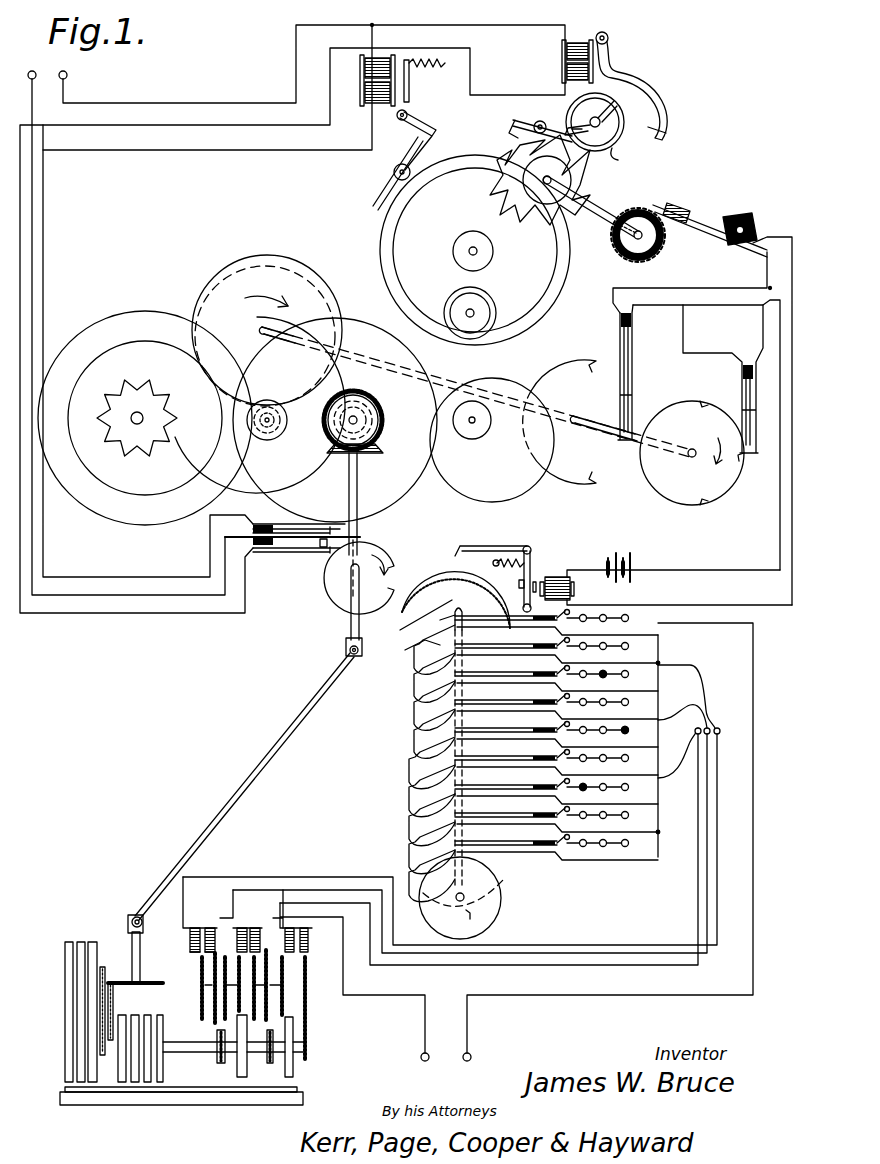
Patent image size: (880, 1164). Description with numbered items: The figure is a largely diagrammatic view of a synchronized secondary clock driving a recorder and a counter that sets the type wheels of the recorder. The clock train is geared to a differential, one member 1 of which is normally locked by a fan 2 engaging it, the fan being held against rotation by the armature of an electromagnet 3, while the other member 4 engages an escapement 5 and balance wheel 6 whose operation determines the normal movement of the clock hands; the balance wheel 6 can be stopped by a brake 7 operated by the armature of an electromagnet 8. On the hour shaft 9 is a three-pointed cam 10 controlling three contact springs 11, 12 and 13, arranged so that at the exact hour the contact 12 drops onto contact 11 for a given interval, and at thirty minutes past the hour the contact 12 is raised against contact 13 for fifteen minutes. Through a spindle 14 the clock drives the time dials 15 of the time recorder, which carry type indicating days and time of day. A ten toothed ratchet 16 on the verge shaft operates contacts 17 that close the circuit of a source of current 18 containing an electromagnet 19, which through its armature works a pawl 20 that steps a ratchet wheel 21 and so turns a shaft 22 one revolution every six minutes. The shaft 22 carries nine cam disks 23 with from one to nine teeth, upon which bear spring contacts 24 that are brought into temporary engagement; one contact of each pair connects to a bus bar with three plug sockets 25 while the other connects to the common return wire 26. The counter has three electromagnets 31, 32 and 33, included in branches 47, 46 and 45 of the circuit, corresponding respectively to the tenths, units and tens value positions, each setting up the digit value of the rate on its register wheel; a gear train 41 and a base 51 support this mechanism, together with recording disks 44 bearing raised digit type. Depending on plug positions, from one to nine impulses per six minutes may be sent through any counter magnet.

The differential member 1 is at (378, 257).
The fan 2 is at (437, 153).
The electromagnet 3 is at (380, 106).
The differential member 4 is at (540, 263).
The escapement 5 is at (530, 126).
The balance wheel 6 is at (612, 152).
The brake 7 is at (660, 130).
The electromagnet 8 is at (562, 55).
The hour shaft 9 is at (358, 488).
The three-pointed cam 10 is at (338, 590).
The contact spring 11 is at (287, 553).
The contact spring 12 is at (316, 548).
The contact spring 13 is at (286, 527).
The spindle 14 is at (265, 770).
The time dials 15 is at (82, 940).
The ten toothed ratchet 16 is at (666, 250).
The contacts 17 is at (700, 222).
The source of current 18 is at (630, 558).
The electromagnet 19 is at (553, 577).
The pawl 20 is at (498, 562).
The ratchet wheel 21 is at (438, 620).
The shaft 22 is at (453, 614).
The cam disks 23 is at (420, 690).
The spring contacts 24 is at (516, 846).
The plug sockets 25 is at (628, 618).
The common return wire 26 is at (753, 846).
The electromagnet 31 is at (308, 940).
The electromagnet 32 is at (240, 928).
The electromagnet 33 is at (203, 928).
The gear train 41 is at (292, 1072).
The recording disks 44 is at (140, 985).
The circuit branch 45 is at (662, 832).
The circuit branch 46 is at (698, 892).
The circuit branch 47 is at (717, 838).
The base 51 is at (186, 1101).